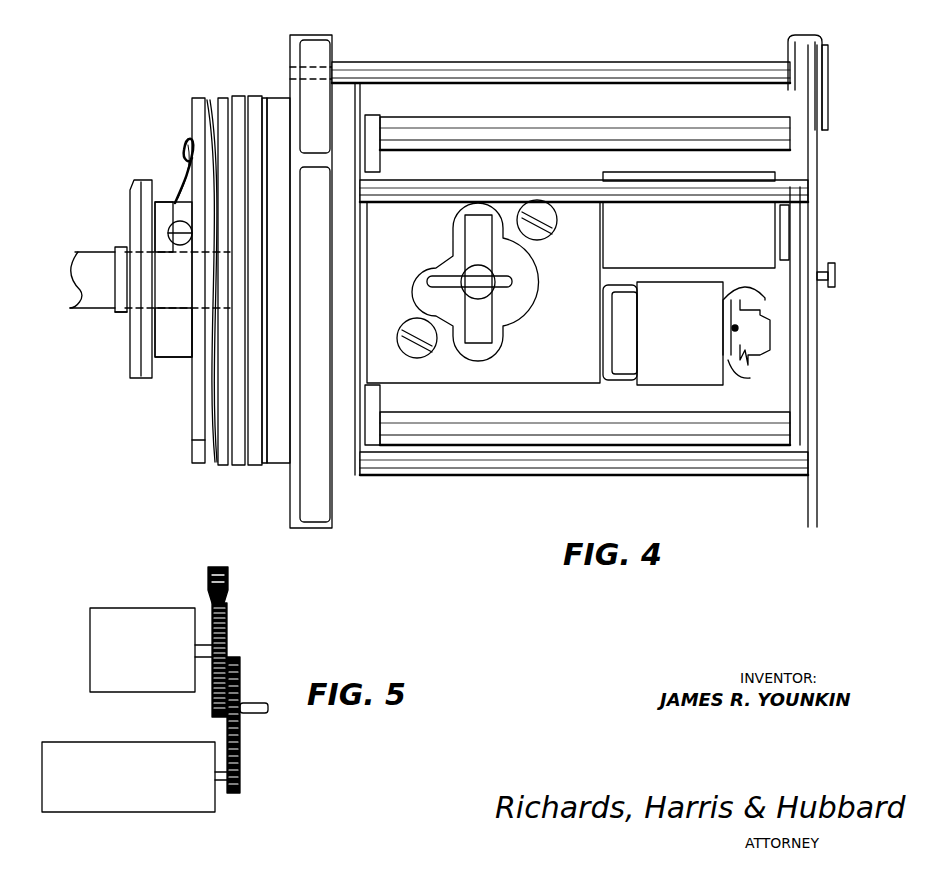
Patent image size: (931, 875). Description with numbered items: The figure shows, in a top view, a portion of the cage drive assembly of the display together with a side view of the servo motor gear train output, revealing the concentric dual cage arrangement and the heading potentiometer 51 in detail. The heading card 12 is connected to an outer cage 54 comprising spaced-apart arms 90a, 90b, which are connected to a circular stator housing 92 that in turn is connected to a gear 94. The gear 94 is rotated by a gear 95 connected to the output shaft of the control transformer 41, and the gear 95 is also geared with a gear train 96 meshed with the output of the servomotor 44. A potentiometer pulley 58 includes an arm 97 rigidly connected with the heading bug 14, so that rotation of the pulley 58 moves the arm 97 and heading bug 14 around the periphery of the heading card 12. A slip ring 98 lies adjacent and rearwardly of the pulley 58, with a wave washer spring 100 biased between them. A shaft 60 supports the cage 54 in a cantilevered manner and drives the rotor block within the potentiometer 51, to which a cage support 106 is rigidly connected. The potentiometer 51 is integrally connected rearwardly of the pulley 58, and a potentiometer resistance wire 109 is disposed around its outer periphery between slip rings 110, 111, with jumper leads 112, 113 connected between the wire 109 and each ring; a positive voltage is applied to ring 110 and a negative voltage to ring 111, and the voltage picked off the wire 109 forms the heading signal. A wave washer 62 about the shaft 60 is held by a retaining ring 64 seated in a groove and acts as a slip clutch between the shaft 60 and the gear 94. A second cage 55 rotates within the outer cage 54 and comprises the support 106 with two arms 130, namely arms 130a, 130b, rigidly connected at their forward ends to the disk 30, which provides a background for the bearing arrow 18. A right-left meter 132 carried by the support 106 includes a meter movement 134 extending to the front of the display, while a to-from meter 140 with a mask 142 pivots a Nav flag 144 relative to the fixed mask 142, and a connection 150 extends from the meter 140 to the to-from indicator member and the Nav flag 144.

In FIG. 4, the heading card 12 is at (813, 246).
In FIG. 4, the heading bug 14 is at (826, 75).
In FIG. 4, the bearing arrow 18 is at (832, 278).
In FIG. 4, the disk 30 is at (793, 380).
In FIG. 5, the control transformer 41 is at (151, 650).
In FIG. 5, the servomotor 44 is at (134, 777).
In FIG. 4, the heading potentiometer 51 is at (280, 464).
In FIG. 4, the cage 54 is at (525, 480).
In FIG. 4, the second cage 55 is at (666, 112).
In FIG. 4, the potentiometer pulley 58 is at (322, 50).
In FIG. 4, the shaft 60 is at (82, 252).
In FIG. 4, the wave washer 62 is at (120, 240).
In FIG. 4, the retaining ring 64 is at (115, 312).
In FIG. 4, the arm 90a is at (648, 462).
In FIG. 4, the arm 90b is at (575, 192).
In FIG. 4, the stator housing 92 is at (346, 458).
In FIG. 4, the gear 94 is at (142, 380).
In FIG. 5, the gear 94 is at (228, 578).
In FIG. 5, the gear 95 is at (227, 625).
In FIG. 5, the gear train 96 is at (240, 672).
In FIG. 4, the arm 97 is at (460, 70).
In FIG. 4, the slip ring 98 is at (196, 441).
In FIG. 4, the wave washer spring 100 is at (213, 465).
In FIG. 4, the cage support 106 is at (378, 397).
In FIG. 4, the potentiometer resistance wire 109 is at (248, 97).
In FIG. 4, the slip ring 110 is at (233, 98).
In FIG. 4, the slip ring 111 is at (272, 98).
In FIG. 4, the jumper lead 112 is at (258, 96).
In FIG. 4, the jumper lead 113 is at (230, 466).
In FIG. 4, the arms 130 is at (178, 190).
In FIG. 4, the arm 130a is at (455, 128).
In FIG. 4, the arm 130b is at (668, 427).
In FIG. 4, the right-left meter 132 is at (483, 292).
In FIG. 4, the meter movement 134 is at (485, 277).
In FIG. 4, the to-from meter 140 is at (663, 333).
In FIG. 4, the mask 142 is at (689, 220).
In FIG. 4, the Nav flag 144 is at (783, 222).
In FIG. 4, the connection 150 is at (780, 302).